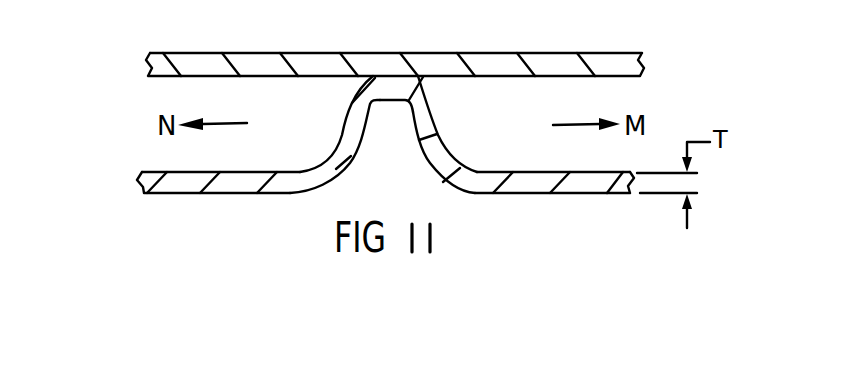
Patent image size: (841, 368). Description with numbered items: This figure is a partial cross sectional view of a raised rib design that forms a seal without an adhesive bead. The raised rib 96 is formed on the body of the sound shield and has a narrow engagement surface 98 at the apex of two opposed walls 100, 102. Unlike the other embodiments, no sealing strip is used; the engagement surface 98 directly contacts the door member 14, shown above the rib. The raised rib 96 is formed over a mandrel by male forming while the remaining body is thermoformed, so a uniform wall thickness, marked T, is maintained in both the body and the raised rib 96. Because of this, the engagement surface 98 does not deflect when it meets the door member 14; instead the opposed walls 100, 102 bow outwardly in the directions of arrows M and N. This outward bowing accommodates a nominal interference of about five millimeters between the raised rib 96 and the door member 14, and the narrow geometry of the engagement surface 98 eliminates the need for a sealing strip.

The door member 14 is at (560, 64).
The raised rib 96 is at (133, 100).
The engagement surface 98 is at (395, 88).
The opposed wall 100 is at (435, 142).
The opposed wall 102 is at (351, 115).